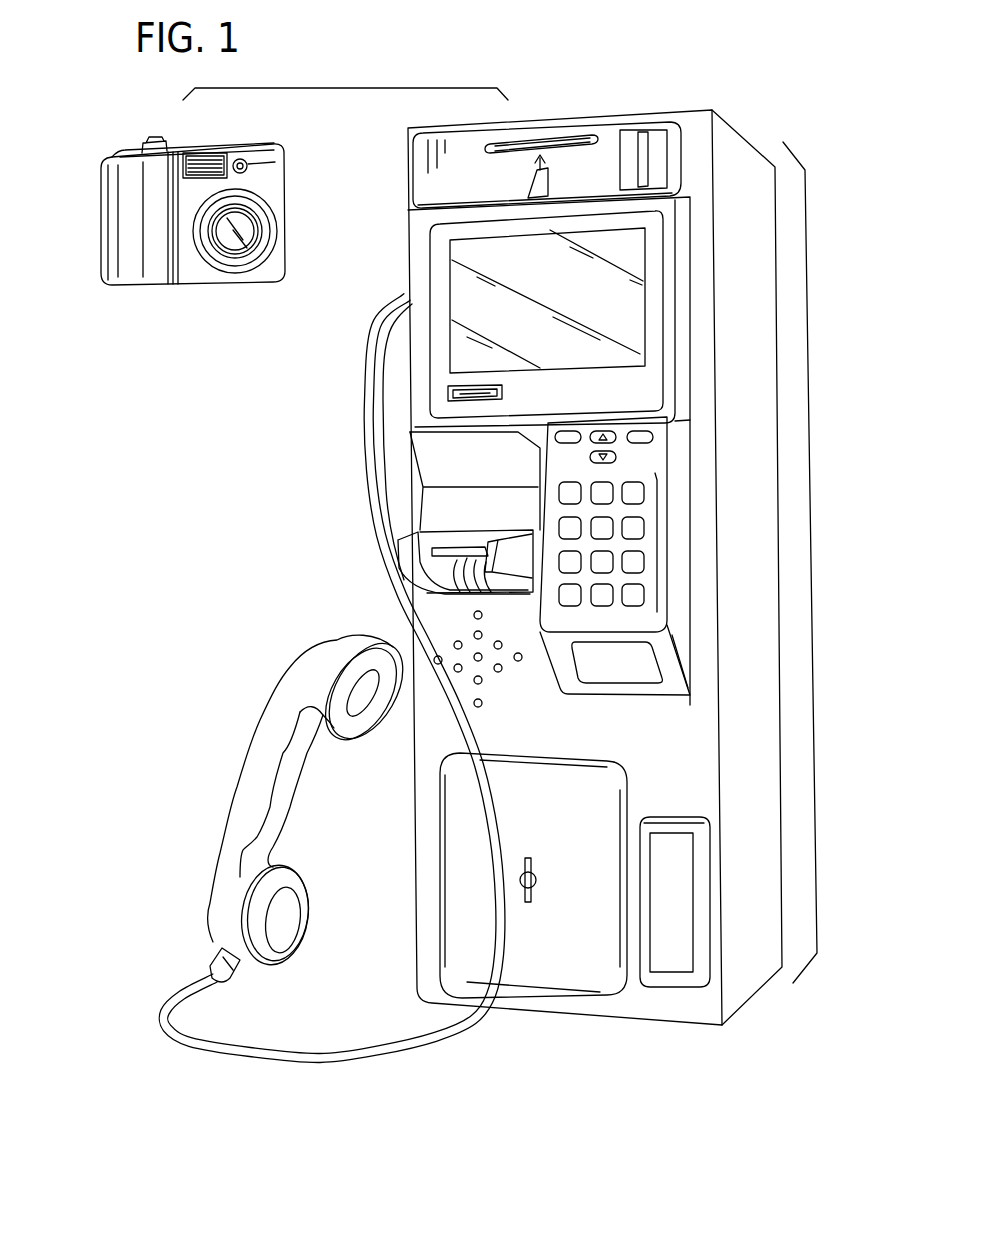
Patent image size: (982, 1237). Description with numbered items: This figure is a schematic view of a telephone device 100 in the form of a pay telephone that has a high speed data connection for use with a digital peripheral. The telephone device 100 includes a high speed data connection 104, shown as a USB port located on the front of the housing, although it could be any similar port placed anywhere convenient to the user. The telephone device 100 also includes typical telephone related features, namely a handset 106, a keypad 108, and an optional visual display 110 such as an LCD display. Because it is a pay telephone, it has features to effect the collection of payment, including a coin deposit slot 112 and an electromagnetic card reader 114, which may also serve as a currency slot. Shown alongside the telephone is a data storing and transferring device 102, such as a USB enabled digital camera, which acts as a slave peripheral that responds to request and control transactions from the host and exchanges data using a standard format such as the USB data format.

The telephone device 100 is at (812, 562).
The data storing and transferring device 102 is at (105, 160).
The high speed data connection 104 is at (448, 390).
The handset 106 is at (232, 803).
The keypad 108 is at (662, 546).
The visual display 110 is at (464, 276).
The coin deposit slot 112 is at (657, 140).
The electromagnetic card reader 114 is at (552, 142).